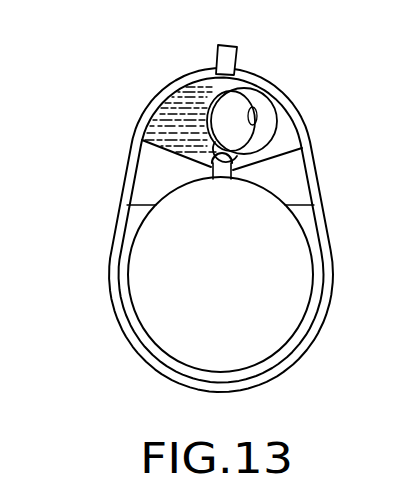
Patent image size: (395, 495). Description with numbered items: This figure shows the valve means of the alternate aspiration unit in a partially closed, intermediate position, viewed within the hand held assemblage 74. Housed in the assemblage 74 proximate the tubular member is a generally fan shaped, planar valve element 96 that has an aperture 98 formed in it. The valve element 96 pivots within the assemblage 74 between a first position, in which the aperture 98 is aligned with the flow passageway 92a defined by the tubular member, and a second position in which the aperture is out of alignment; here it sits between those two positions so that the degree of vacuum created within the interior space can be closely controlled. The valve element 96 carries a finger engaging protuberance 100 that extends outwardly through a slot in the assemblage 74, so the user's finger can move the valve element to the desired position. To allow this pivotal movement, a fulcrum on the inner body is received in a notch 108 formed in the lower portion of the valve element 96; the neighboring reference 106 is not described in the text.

The hand held assemblage 74 is at (100, 263).
The flow passageway 92a is at (252, 112).
The valve element 96 is at (165, 118).
The aperture 98 is at (217, 104).
The finger engaging protuberance 100 is at (230, 52).
The left slot wall 106 is at (217, 176).
The notch 108 is at (233, 177).